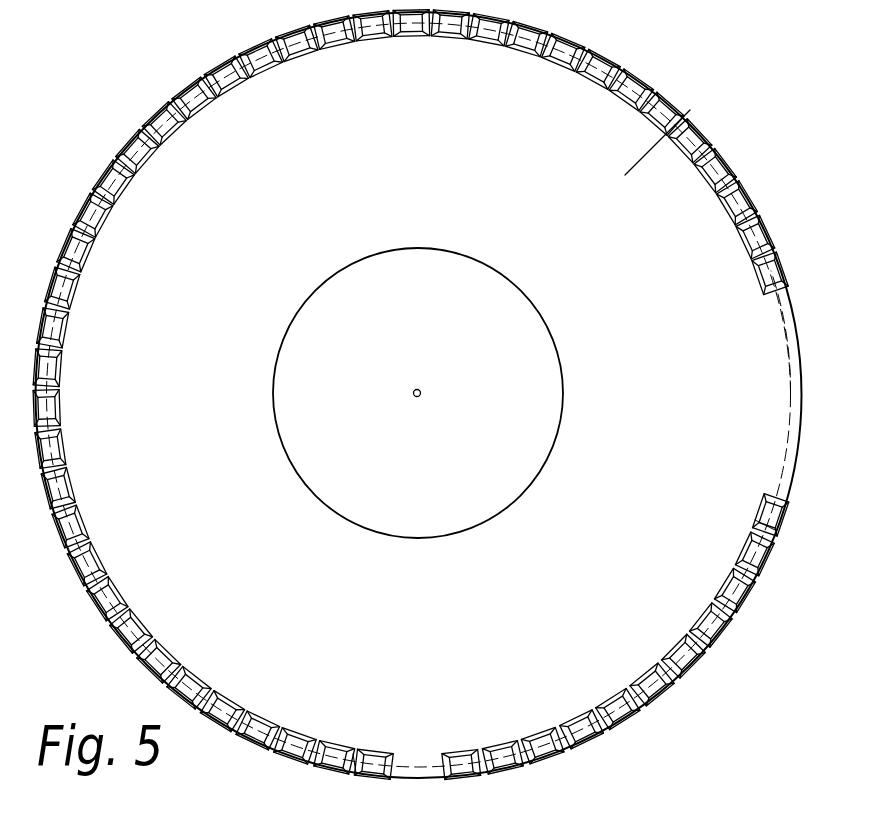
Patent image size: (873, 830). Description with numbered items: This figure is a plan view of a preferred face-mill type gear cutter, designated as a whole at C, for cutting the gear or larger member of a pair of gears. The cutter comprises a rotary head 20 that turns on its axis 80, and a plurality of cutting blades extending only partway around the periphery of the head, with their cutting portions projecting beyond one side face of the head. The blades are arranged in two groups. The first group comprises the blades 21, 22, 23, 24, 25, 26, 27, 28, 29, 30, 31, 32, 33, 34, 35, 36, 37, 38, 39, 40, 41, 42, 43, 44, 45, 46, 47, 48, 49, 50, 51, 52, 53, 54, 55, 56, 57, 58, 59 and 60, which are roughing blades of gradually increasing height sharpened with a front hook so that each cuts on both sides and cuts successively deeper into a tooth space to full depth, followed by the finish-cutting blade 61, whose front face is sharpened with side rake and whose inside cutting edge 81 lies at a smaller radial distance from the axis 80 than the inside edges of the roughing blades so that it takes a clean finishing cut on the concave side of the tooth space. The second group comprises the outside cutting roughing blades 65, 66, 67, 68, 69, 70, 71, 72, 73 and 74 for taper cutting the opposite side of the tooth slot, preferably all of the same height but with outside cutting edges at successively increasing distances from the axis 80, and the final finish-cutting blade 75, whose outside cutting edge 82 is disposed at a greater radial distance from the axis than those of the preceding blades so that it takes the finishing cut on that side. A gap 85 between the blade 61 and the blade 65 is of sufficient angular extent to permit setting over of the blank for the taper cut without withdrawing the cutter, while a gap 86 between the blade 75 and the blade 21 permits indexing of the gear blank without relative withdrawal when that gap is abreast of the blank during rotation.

The rotary head 20 is at (419, 395).
The roughing blade 21 is at (761, 277).
The roughing blade 22 is at (746, 241).
The roughing blade 23 is at (728, 208).
The roughing blade 24 is at (707, 177).
The roughing blade 25 is at (683, 148).
The roughing blade 26 is at (656, 121).
The roughing blade 27 is at (626, 98).
The roughing blade 28 is at (593, 78).
The roughing blade 29 is at (559, 62).
The roughing blade 30 is at (524, 49).
The roughing blade 31 is at (487, 40).
The roughing blade 32 is at (449, 34).
The roughing blade 33 is at (412, 33).
The roughing blade 34 is at (374, 36).
The roughing blade 35 is at (336, 42).
The roughing blade 36 is at (300, 53).
The roughing blade 37 is at (265, 67).
The roughing blade 38 is at (232, 85).
The roughing blade 39 is at (200, 106).
The roughing blade 40 is at (171, 131).
The roughing blade 41 is at (145, 158).
The roughing blade 42 is at (122, 188).
The roughing blade 43 is at (102, 220).
The roughing blade 44 is at (85, 254).
The roughing blade 45 is at (72, 291).
The roughing blade 46 is at (62, 329).
The roughing blade 47 is at (57, 369).
The roughing blade 48 is at (57, 408).
The roughing blade 49 is at (60, 447).
The roughing blade 50 is at (68, 486).
The roughing blade 51 is at (80, 523).
The roughing blade 52 is at (96, 559).
The roughing blade 53 is at (116, 593).
The roughing blade 54 is at (139, 625).
The roughing blade 55 is at (166, 654).
The roughing blade 56 is at (195, 680).
The roughing blade 57 is at (228, 703).
The roughing blade 58 is at (262, 721).
The roughing blade 59 is at (298, 736).
The roughing blade 60 is at (336, 748).
The finish-cutting blade 61 is at (375, 754).
The outside cutting roughing blade 65 is at (460, 755).
The outside cutting roughing blade 66 is at (500, 748).
The outside cutting roughing blade 67 is at (539, 736).
The outside cutting roughing blade 68 is at (577, 720).
The outside cutting roughing blade 69 is at (613, 701).
The outside cutting roughing blade 70 is at (646, 677).
The outside cutting roughing blade 71 is at (676, 649).
The outside cutting roughing blade 72 is at (703, 619).
The outside cutting roughing blade 73 is at (726, 585).
The outside cutting roughing blade 74 is at (746, 549).
The final finish-cutting blade 75 is at (761, 512).
The axis of the cutter 80 is at (421, 391).
The inside cutting edge 81 is at (353, 773).
The outside cutting edge 82 is at (757, 533).
The gap 85 is at (422, 780).
The gap 86 is at (792, 345).
The gear cutter C is at (690, 110).